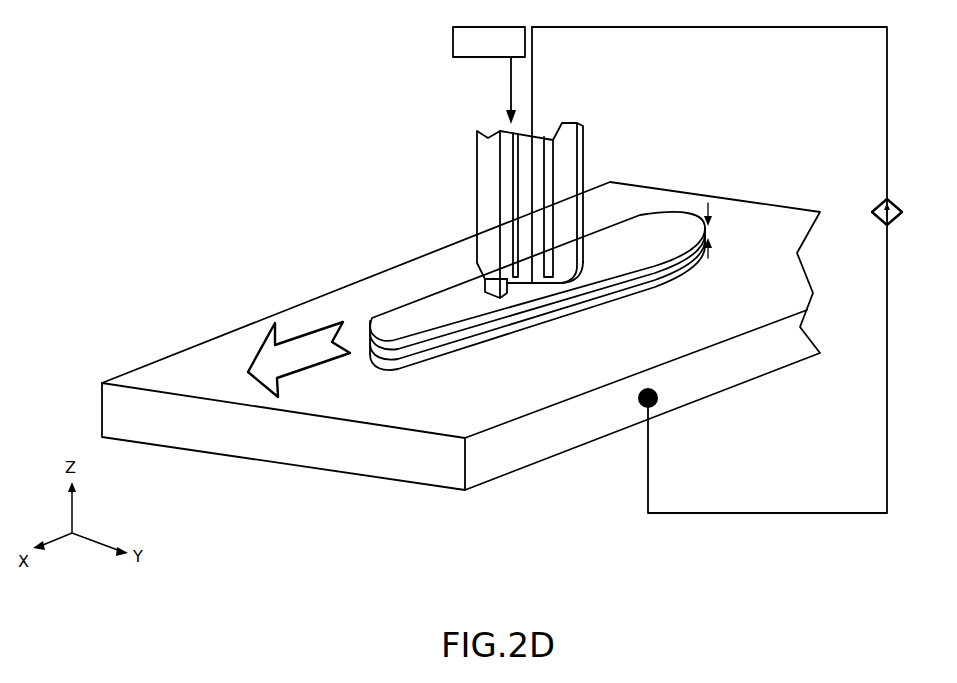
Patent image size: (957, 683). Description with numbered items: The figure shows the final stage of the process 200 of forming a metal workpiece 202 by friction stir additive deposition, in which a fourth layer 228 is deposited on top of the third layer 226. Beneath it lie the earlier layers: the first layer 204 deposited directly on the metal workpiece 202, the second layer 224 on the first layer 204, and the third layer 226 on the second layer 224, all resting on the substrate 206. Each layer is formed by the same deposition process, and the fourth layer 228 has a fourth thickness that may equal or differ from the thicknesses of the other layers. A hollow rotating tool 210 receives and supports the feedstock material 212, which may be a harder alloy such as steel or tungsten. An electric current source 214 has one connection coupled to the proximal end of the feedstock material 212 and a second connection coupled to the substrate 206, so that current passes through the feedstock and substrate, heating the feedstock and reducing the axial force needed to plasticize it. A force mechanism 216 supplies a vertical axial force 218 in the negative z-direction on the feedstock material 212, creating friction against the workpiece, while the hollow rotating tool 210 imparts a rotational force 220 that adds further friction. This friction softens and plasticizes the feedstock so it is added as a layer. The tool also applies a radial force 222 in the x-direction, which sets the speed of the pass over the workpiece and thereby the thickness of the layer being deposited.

The process 200 is at (172, 194).
The metal workpiece 202 is at (573, 255).
The first layer 204 is at (648, 285).
The substrate 206 is at (385, 288).
The hollow rotating tool 210 is at (480, 167).
The feedstock material 212 is at (516, 138).
The electric current source 214 is at (875, 208).
The force mechanism 216 is at (489, 42).
The vertical axial force 218 is at (510, 92).
The rotational force 220 is at (568, 158).
The radial force 222 is at (304, 333).
The second layer 224 is at (668, 268).
The third layer 226 is at (688, 252).
The fourth layer 228 is at (672, 228).